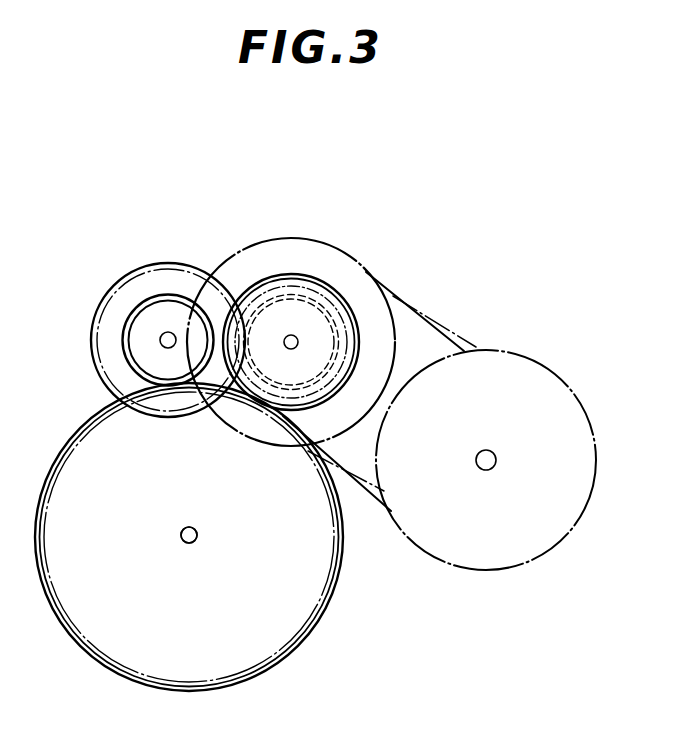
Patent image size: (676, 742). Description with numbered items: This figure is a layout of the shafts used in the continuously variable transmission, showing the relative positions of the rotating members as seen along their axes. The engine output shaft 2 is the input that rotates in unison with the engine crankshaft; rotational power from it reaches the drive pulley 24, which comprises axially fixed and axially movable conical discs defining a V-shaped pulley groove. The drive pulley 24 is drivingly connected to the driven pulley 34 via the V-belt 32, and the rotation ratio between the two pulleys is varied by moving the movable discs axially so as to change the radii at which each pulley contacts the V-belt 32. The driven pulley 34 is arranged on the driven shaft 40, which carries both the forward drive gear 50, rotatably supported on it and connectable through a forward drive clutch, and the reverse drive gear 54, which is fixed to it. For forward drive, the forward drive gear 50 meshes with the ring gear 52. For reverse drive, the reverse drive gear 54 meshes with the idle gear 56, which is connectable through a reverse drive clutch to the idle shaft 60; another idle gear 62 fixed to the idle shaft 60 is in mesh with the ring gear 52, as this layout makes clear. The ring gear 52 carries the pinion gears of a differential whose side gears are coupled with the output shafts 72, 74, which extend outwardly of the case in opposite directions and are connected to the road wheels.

The engine output shaft 2 is at (494, 453).
The drive pulley 24 is at (567, 373).
The V-belt 32 is at (453, 328).
The driven pulley 34 is at (386, 256).
The driven shaft 40 is at (294, 329).
The forward drive gear 50 is at (273, 275).
The ring gear 52 is at (328, 600).
The reverse drive gear 54 is at (307, 292).
The idle gear 56 is at (158, 262).
The idle shaft 60 is at (160, 342).
The idle gear 62 is at (133, 313).
The output shaft 72 is at (197, 541).
The output shaft 74 is at (189, 535).